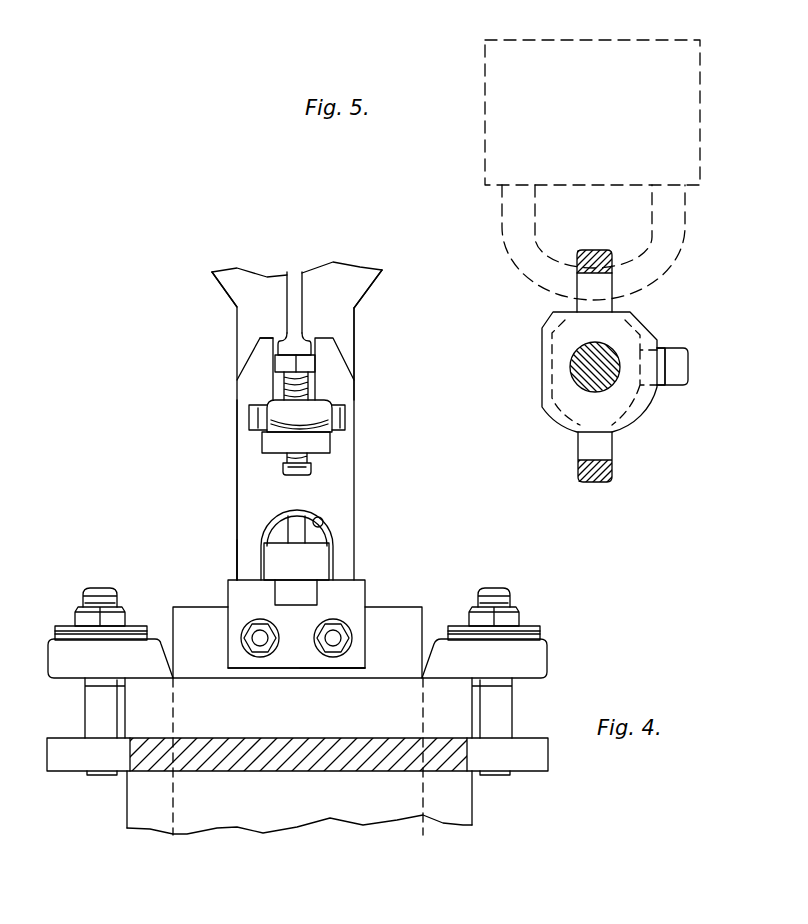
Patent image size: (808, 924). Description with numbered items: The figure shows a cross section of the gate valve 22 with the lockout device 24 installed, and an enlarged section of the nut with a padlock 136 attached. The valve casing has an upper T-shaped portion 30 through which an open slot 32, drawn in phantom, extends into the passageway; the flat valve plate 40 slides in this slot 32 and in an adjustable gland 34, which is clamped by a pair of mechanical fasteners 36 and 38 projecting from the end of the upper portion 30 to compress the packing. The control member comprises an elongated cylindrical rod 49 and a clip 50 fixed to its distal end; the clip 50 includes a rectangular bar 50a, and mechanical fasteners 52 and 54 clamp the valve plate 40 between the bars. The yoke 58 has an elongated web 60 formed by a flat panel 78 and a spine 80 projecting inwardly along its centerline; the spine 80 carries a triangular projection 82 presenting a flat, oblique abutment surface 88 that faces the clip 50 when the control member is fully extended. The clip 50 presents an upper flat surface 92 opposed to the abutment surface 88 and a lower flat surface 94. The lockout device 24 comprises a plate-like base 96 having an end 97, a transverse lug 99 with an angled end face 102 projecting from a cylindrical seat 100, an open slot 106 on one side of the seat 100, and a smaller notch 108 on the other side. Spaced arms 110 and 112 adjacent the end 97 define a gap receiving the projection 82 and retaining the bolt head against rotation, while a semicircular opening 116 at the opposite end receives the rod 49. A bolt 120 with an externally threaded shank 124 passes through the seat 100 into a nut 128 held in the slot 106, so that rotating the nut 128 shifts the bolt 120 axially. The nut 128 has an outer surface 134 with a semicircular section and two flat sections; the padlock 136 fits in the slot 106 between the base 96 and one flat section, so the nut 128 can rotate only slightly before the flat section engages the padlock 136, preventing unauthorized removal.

In FIG. 4, the valve 22 is at (552, 658).
In FIG. 4, the lockout device 24 is at (362, 460).
In FIG. 4, the upper T-shaped portion 30 is at (528, 763).
In FIG. 4, the open slot 32 is at (423, 797).
In FIG. 4, the adjustable gland 34 is at (72, 658).
In FIG. 4, the mechanical fastener 36 is at (97, 590).
In FIG. 4, the mechanical fastener 38 is at (508, 592).
In FIG. 4, the valve plate 40 is at (182, 603).
In FIG. 4, the rod 49 is at (327, 558).
In FIG. 4, the clip 50 is at (275, 670).
In FIG. 4, the bar 50a is at (357, 587).
In FIG. 4, the mechanical fastener 52 is at (241, 638).
In FIG. 4, the mechanical fastener 54 is at (357, 637).
In FIG. 4, the yoke 58 is at (360, 268).
In FIG. 4, the web 60 is at (223, 280).
In FIG. 4, the panel 78 is at (356, 317).
In FIG. 4, the spine 80 is at (293, 277).
In FIG. 4, the projection 82 is at (283, 340).
In FIG. 4, the abutment surface 88 is at (307, 362).
In FIG. 4, the flat surface 92 is at (248, 578).
In FIG. 4, the second flat surface 94 is at (330, 670).
In FIG. 4, the base 96 is at (237, 477).
In FIG. 4, the end 97 is at (266, 334).
In FIG. 5, the lug 99 is at (677, 347).
In FIG. 4, the seat 100 is at (270, 442).
In FIG. 5, the seat 100 is at (543, 343).
In FIG. 5, the angled end face 102 is at (678, 368).
In FIG. 4, the open slot 106 is at (340, 420).
In FIG. 5, the open slot 106 is at (600, 450).
In FIG. 4, the notch 108 is at (307, 476).
In FIG. 4, the arm 110 is at (340, 372).
In FIG. 4, the arm 112 is at (260, 367).
In FIG. 4, the semicircular opening 116 is at (323, 525).
In FIG. 4, the bolt 120 is at (286, 390).
In FIG. 5, the shank 124 is at (577, 372).
In FIG. 4, the nut 128 is at (317, 410).
In FIG. 5, the nut 128 is at (650, 403).
In FIG. 5, the outer surface 134 is at (623, 313).
In FIG. 5, the padlock 136 is at (702, 143).